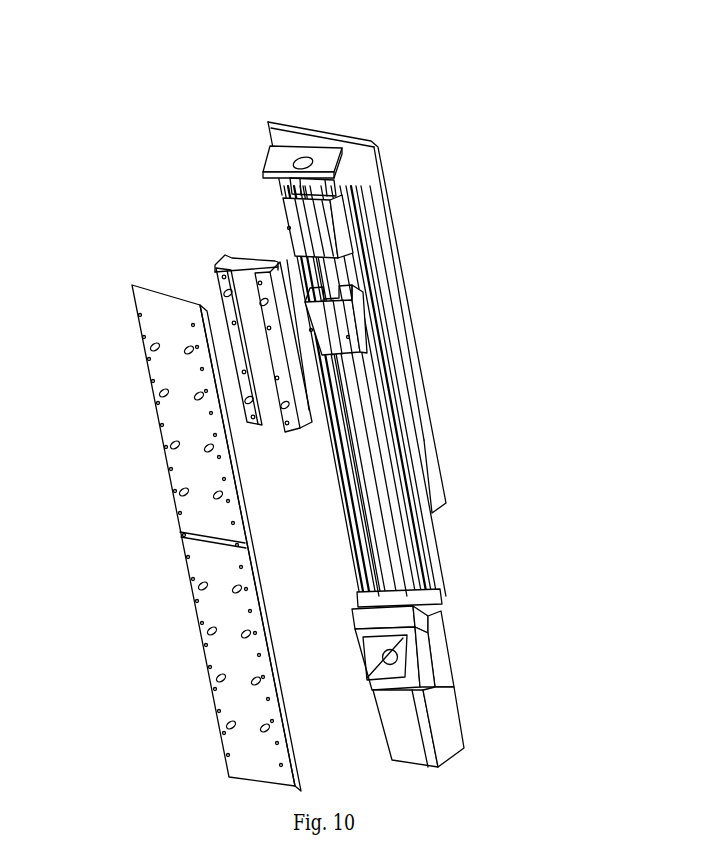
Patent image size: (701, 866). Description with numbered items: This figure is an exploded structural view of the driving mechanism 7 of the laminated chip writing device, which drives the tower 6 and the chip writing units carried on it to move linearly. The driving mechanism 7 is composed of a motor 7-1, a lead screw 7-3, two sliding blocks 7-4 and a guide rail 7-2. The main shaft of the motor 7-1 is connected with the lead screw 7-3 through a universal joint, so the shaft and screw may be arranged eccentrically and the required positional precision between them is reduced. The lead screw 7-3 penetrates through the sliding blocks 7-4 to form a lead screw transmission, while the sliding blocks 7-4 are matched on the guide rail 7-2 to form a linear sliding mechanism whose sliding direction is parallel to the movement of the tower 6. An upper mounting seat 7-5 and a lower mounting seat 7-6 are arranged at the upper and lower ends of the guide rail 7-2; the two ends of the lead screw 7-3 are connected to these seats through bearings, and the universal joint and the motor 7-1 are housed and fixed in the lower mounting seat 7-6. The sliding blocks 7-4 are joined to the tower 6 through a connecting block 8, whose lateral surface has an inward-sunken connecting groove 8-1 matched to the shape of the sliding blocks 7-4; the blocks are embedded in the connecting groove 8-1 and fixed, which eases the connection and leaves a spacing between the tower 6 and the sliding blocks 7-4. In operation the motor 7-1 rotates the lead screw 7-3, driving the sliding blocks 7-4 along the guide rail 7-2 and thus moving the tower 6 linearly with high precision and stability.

The tower 6 is at (157, 360).
The connecting block 8 is at (232, 258).
The connecting groove 8-1 is at (245, 250).
The driving mechanism 7 is at (472, 512).
The motor 7-1 is at (408, 741).
The guide rail 7-2 is at (370, 267).
The lead screw 7-3 is at (357, 422).
The sliding blocks 7-4 is at (277, 210).
The upper mounting seat 7-5 is at (323, 172).
The lower mounting seat 7-6 is at (444, 617).